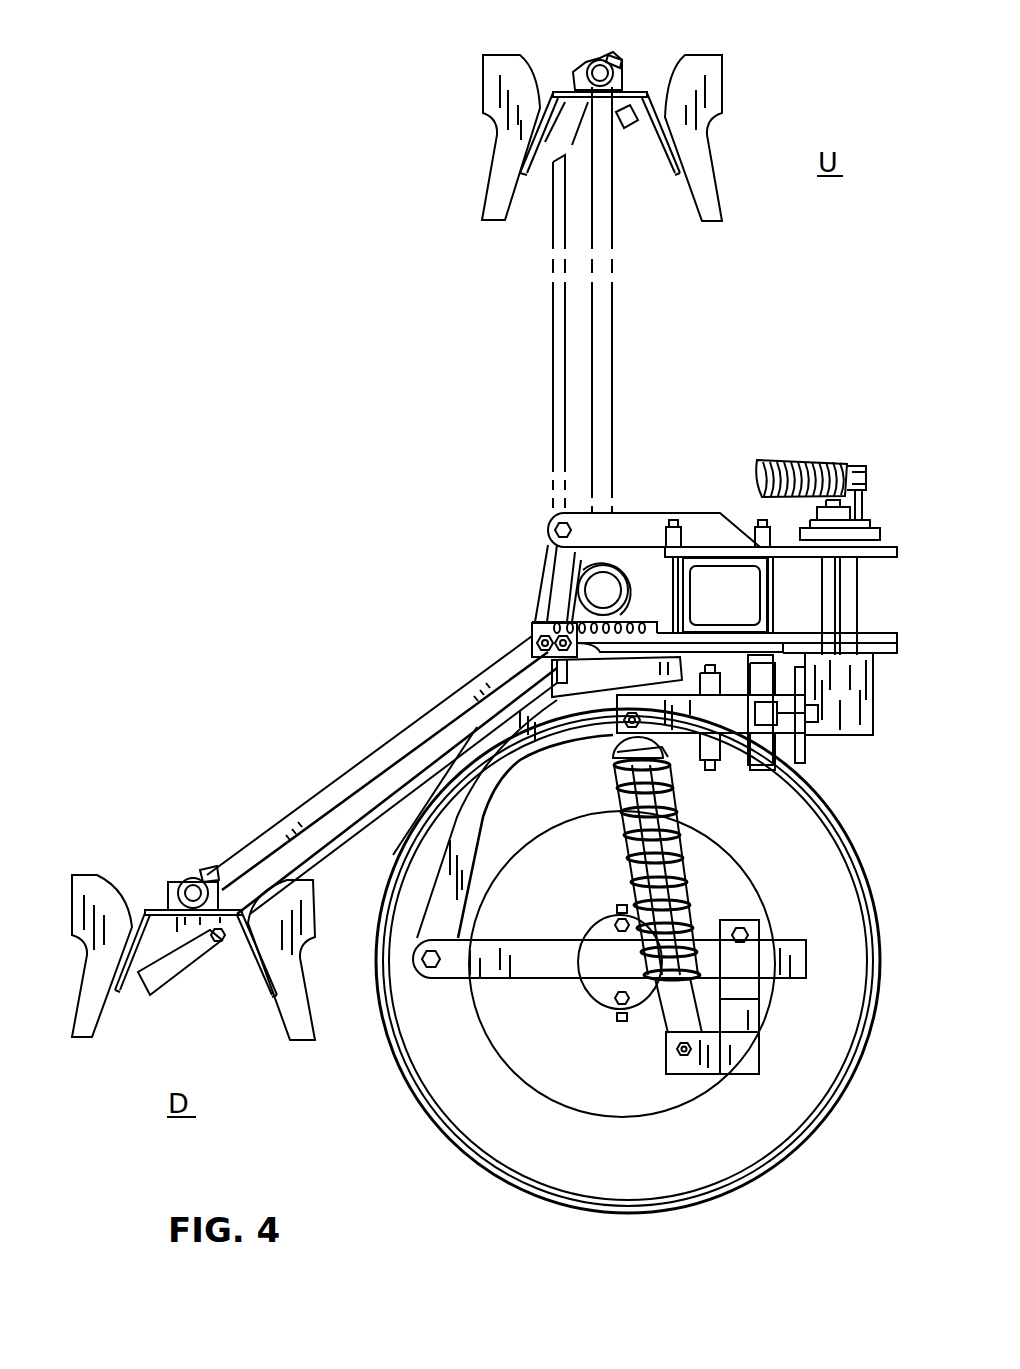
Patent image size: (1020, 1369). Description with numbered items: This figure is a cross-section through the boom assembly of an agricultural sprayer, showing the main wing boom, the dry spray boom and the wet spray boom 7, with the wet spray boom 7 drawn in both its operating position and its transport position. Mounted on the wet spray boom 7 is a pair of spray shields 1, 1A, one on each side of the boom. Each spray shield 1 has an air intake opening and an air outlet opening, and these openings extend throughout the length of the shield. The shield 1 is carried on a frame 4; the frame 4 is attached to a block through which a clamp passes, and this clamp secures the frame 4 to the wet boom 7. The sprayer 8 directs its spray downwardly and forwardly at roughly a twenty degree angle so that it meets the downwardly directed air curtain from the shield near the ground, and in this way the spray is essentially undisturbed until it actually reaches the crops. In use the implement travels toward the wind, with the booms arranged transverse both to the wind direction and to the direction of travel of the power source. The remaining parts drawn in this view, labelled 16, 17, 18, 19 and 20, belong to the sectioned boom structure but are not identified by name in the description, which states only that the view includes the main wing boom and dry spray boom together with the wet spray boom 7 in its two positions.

The spray shield 1 is at (723, 86).
The disc blade (left) 1A is at (493, 86).
The frame 4 is at (623, 83).
The wet spray boom 7 is at (590, 63).
The sprayer 8 is at (635, 132).
The outer arm tube 16 is at (612, 300).
The inner arm rod 17 is at (553, 300).
The pivot hub 18 is at (597, 585).
The square tube mount 19 is at (718, 578).
The gauge wheel 20 is at (750, 878).